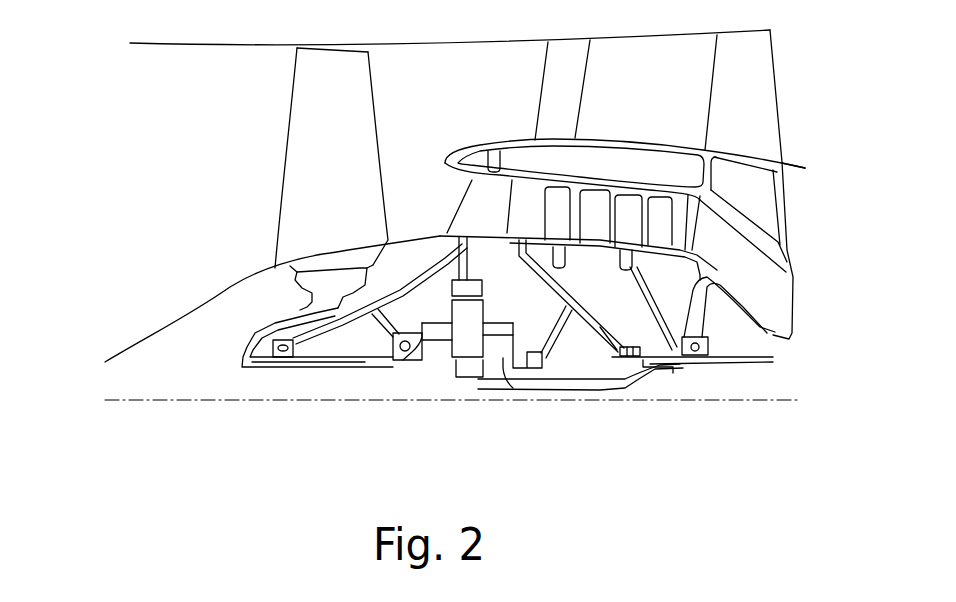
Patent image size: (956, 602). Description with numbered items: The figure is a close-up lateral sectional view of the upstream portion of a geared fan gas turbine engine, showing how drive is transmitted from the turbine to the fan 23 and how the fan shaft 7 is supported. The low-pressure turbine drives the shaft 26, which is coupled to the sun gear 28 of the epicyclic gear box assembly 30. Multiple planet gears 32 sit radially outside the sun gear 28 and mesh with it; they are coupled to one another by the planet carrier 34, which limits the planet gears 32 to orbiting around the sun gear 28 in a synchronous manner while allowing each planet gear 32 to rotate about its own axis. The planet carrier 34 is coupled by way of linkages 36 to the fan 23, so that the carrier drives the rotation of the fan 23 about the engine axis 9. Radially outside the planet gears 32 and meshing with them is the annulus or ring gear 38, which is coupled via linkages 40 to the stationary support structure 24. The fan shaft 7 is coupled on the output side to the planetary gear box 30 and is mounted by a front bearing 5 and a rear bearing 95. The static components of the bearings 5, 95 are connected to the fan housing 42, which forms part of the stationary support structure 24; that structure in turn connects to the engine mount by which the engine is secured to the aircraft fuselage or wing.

The front bearing 5 is at (285, 366).
The fan shaft 7 is at (327, 367).
The engine axis 9 is at (203, 400).
The fan 23 is at (300, 160).
The stationary support structure 24 is at (475, 203).
The shaft 26 is at (597, 380).
The sun gear 28 is at (468, 380).
The epicyclic gear box assembly 30 is at (428, 382).
The planet gears 32 is at (455, 380).
The planet carrier 34 is at (510, 357).
The linkages 36 is at (420, 380).
The ring gear 38 is at (452, 290).
The linkages 40 is at (470, 270).
The fan housing 42 is at (410, 292).
The rear bearing 95 is at (392, 362).